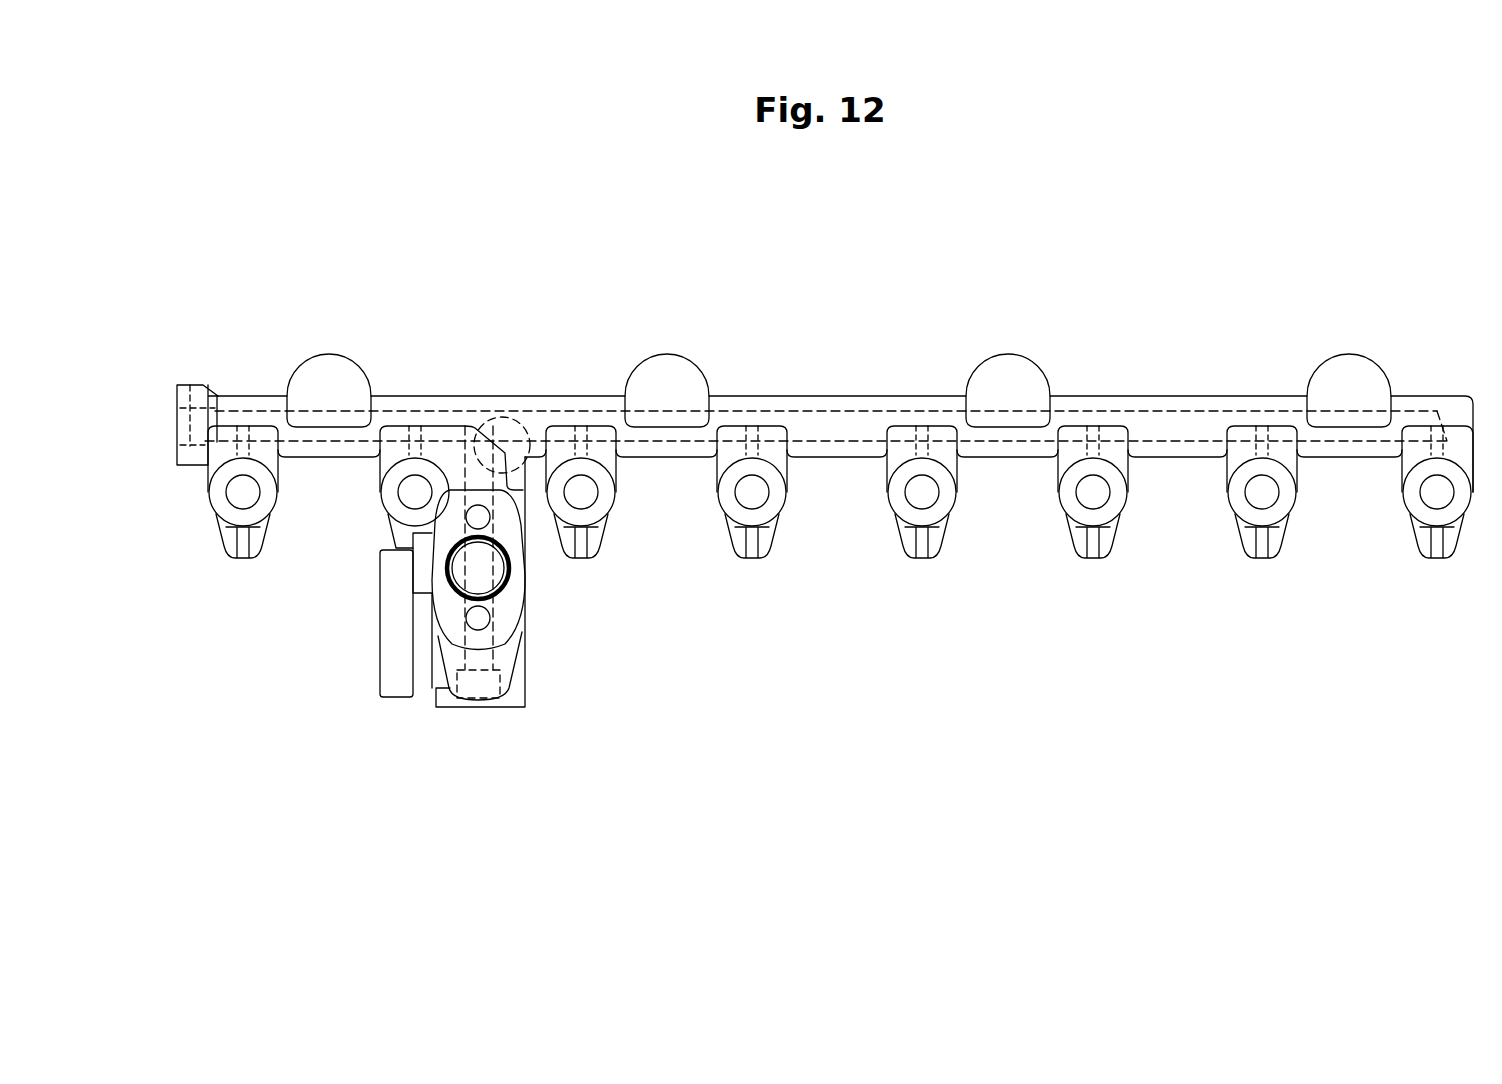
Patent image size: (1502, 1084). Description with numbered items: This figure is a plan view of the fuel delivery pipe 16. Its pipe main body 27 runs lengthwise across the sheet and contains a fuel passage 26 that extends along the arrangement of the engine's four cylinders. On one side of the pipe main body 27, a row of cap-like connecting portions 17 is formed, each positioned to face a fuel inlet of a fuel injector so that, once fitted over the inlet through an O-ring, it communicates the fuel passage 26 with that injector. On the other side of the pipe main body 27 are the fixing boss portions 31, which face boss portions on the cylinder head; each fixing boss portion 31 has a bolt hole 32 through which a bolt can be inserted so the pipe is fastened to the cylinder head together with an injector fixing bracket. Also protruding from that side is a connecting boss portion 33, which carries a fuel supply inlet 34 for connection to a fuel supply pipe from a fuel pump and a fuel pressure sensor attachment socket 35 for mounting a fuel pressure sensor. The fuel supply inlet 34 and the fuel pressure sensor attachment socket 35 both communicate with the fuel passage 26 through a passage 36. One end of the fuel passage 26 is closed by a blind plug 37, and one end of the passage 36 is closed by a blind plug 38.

The fuel delivery pipe 16 is at (900, 242).
The cap-like connecting portion 17 is at (340, 367).
The fuel passage 26 is at (1168, 423).
The pipe main body 27 is at (1098, 403).
The fixing boss portion 31 is at (222, 508).
The bolt hole 32 is at (250, 492).
The connecting boss portion 33 is at (513, 693).
The fuel supply inlet 34 is at (495, 592).
The fuel pressure sensor attachment socket 35 is at (377, 667).
The passage 36 is at (520, 432).
The blind plug 37 is at (192, 405).
The blind plug 38 is at (465, 715).